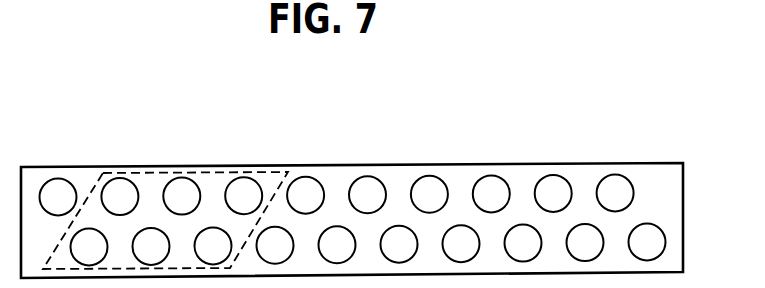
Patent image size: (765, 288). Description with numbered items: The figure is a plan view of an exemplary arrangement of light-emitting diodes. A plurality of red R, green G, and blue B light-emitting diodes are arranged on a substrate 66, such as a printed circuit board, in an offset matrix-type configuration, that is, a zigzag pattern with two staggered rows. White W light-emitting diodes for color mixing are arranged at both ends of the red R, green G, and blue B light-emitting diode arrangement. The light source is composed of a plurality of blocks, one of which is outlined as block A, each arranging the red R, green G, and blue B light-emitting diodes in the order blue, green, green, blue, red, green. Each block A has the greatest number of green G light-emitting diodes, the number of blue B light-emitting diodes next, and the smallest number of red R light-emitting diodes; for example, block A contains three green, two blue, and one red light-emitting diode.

The substrate 66 is at (384, 220).
The block A is at (207, 172).
The white light-emitting diode W is at (353, 220).
The green light-emitting diode G is at (367, 220).
The blue light-emitting diode B is at (321, 220).
The red light-emitting diode R is at (399, 244).